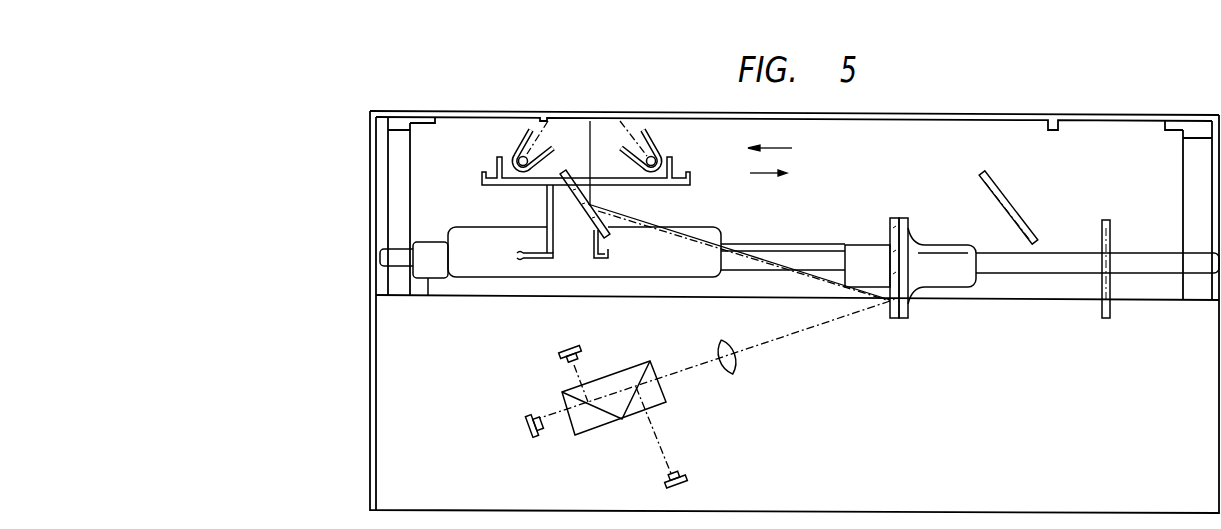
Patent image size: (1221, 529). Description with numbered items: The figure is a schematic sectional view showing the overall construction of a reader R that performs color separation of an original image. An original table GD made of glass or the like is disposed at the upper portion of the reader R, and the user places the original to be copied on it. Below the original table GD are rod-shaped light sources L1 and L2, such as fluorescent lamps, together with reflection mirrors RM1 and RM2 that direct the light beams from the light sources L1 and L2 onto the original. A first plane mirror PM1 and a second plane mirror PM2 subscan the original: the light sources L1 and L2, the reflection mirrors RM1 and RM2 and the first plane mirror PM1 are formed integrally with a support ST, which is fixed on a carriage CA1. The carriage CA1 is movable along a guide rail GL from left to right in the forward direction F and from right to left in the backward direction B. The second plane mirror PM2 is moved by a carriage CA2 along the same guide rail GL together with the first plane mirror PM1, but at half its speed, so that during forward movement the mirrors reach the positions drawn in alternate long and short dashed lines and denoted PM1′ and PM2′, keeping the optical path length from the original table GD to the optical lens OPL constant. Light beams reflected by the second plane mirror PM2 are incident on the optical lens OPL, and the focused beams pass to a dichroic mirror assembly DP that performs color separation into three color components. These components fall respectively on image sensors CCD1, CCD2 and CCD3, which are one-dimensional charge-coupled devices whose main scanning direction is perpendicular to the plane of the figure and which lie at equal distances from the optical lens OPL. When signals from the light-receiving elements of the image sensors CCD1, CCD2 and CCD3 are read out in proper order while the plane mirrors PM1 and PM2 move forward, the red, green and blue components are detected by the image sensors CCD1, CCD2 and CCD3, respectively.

The reader R is at (366, 312).
The original table GD is at (637, 113).
The reflection mirror RM1 is at (517, 147).
The reflection mirror RM2 is at (654, 142).
The light source L1 is at (553, 150).
The light source L2 is at (625, 159).
The support ST is at (546, 205).
The first plane mirror PM1 is at (596, 210).
The carriage CA1 is at (708, 230).
The guide rail GL is at (784, 256).
The carriage CA2 is at (863, 247).
The second plane mirror PM2 is at (897, 218).
The first plane mirror position PM1′ is at (993, 178).
The second plane mirror position PM2′ is at (1111, 236).
The backward direction B is at (780, 150).
The forward direction F is at (776, 173).
The optical lens OPL is at (729, 376).
The dichroic mirror assembly DP is at (632, 367).
The image sensor CCD1 is at (684, 485).
The image sensor CCD2 is at (564, 348).
The image sensor CCD3 is at (530, 428).